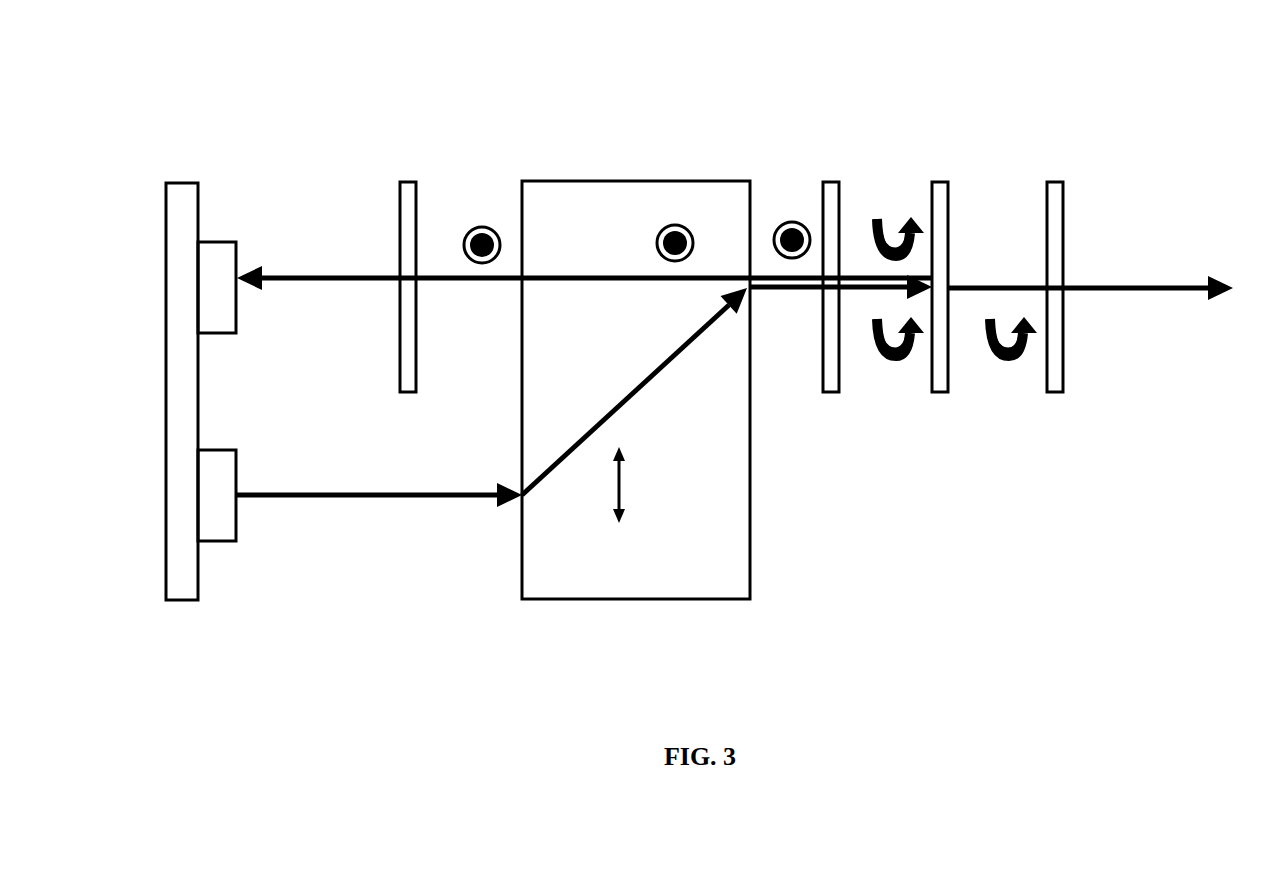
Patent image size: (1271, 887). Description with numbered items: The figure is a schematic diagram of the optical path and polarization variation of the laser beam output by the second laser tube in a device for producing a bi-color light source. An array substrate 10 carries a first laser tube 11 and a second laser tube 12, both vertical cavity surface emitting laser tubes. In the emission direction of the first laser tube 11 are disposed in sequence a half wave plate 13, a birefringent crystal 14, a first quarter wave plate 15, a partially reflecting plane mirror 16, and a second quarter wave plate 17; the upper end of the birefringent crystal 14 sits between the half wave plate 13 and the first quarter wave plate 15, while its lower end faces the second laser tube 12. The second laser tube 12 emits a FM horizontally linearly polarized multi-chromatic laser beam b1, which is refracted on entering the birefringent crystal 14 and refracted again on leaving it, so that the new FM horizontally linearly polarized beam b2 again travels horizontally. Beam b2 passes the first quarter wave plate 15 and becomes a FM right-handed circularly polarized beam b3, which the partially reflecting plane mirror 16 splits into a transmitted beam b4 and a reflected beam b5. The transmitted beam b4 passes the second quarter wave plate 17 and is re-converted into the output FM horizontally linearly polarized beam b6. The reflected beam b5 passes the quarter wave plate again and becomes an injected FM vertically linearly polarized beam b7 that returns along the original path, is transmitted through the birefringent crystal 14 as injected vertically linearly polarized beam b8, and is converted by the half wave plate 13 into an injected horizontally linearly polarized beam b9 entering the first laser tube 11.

The array substrate 10 is at (174, 203).
The first laser tube 11 is at (223, 265).
The second laser tube 12 is at (213, 522).
The half wave plate 13 is at (407, 203).
The birefringent crystal 14 is at (630, 203).
The first quarter wave plate 15 is at (832, 203).
The partially reflecting plane mirror 16 is at (940, 203).
The second quarter wave plate 17 is at (1055, 203).
The FM horizontally linearly polarized multi-chromatic laser beam b1 is at (379, 552).
The new FM horizontally linearly polarized multi-chromatic laser beam b2 is at (727, 385).
The FM right-handed circularly polarized multi-chromatic laser beam b3 is at (900, 365).
The transmitted FM right-handed circularly polarized multi-chromatic laser beam b4 is at (1013, 365).
The reflected FM right-handed circularly polarized multi-chromatic laser beam b5 is at (900, 217).
The output FM horizontally linearly polarized multi-chromatic laser beam b6 is at (1090, 344).
The injected FM vertically linearly polarized multi-chromatic laser beam b7 is at (792, 218).
The injected vertically linearly polarized laser beam b8 is at (482, 220).
The injected horizontally linearly polarized laser beam b9 is at (584, 228).